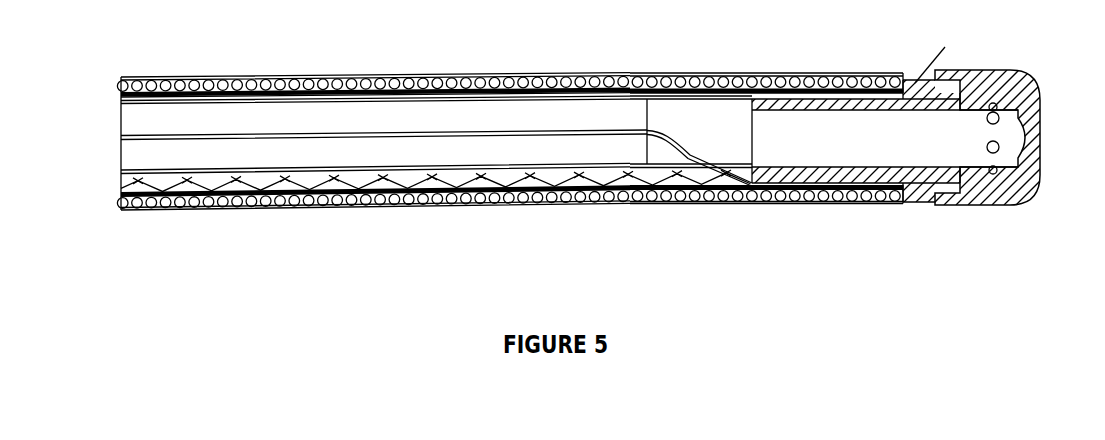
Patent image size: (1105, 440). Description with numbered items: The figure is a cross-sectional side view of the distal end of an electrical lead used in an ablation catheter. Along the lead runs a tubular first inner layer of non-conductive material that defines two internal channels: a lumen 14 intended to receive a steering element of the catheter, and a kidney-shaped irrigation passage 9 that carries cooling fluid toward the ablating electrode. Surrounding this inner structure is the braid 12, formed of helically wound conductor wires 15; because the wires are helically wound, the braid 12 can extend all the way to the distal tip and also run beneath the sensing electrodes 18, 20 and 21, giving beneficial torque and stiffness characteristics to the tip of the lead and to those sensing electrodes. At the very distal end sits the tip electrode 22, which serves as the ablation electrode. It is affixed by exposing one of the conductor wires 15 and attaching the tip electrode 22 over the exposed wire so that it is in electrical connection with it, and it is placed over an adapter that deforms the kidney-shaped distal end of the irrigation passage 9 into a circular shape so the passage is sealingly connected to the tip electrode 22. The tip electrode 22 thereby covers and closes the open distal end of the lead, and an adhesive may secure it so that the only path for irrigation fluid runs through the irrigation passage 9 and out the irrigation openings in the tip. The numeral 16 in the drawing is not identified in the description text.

The irrigation passage 9 is at (555, 117).
The braid 12 is at (118, 189).
The lumen 14 is at (97, 103).
The conductor wires 15 is at (120, 205).
The spring element 16 is at (388, 212).
The sensing electrode 18 is at (187, 76).
The sensing electrode 20 is at (328, 75).
The sensing electrode 21 is at (652, 72).
The tip electrode 22 is at (1030, 78).